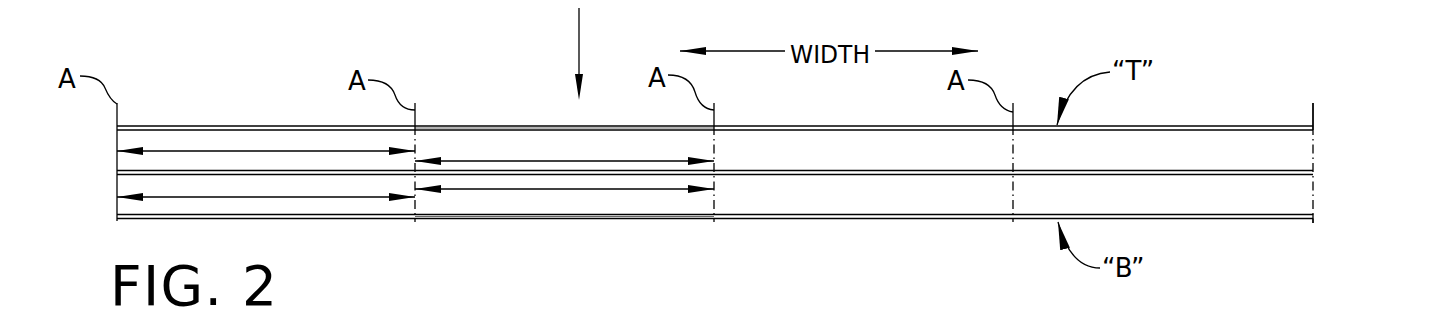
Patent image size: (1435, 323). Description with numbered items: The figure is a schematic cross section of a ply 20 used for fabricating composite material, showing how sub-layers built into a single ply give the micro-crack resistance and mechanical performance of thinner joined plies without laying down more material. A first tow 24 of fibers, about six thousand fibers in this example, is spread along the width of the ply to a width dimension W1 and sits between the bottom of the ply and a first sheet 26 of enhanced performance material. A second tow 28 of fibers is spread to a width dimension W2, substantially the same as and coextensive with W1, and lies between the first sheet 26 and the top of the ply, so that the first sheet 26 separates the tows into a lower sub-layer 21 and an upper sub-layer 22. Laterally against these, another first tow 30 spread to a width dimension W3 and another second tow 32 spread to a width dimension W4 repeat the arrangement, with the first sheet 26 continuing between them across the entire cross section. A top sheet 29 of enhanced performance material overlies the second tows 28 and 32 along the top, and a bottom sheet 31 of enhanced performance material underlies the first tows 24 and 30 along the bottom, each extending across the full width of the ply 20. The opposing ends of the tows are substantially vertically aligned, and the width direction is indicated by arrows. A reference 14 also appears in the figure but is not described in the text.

The direction of travel / incoming material arrow 14 is at (585, 40).
The ply 20 is at (1210, 97).
The sub-layer 21 is at (1320, 200).
The sub-layer 22 is at (1322, 140).
The first tow of fibers 24 is at (131, 203).
The first sheet of enhanced performance material 26 is at (128, 173).
The second tow of fibers 28 is at (128, 139).
The top sheet of enhanced performance material 29 is at (285, 125).
The another first tow of fibers 30 is at (541, 198).
The bottom sheet of enhanced performance material 31 is at (367, 220).
The another second tow of fibers 32 is at (503, 140).
The width dimension of first tow W1 is at (267, 197).
The width dimension of second tow W2 is at (266, 151).
The width dimension of another first tow W3 is at (616, 190).
The width dimension of another second tow W4 is at (563, 160).